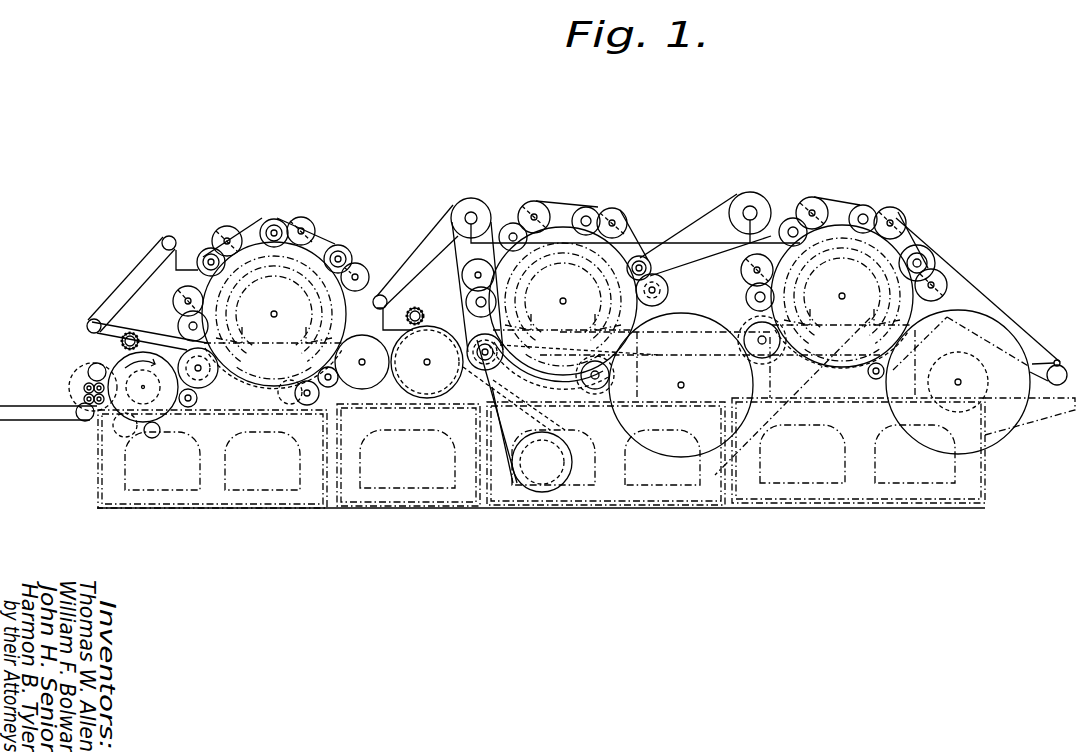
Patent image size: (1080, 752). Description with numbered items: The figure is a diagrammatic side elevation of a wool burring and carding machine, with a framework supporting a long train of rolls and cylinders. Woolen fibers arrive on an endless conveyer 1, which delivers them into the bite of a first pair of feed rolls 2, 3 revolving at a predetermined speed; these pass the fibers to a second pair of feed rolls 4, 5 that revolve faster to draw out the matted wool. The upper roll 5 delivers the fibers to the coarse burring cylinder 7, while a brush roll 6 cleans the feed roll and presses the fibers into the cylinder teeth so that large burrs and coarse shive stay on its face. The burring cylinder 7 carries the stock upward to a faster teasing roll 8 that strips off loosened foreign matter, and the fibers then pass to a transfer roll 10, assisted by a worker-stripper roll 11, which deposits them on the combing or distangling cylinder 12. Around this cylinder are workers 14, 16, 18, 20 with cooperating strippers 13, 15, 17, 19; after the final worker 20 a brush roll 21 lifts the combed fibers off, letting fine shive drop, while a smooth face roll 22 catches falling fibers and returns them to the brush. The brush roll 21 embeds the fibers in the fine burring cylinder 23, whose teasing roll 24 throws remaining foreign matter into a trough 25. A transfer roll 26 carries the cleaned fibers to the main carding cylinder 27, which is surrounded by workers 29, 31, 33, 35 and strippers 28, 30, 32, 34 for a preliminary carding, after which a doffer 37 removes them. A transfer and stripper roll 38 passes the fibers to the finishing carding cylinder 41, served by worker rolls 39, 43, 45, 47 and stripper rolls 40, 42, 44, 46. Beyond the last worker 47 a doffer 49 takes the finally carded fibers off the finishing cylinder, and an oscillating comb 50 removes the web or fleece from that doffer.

The endless conveyer 1 is at (34, 424).
The feed roll 2 is at (83, 393).
The feed roll 3 is at (88, 374).
The feed roll 4 is at (104, 399).
The upper feed roll 5 is at (132, 386).
The brush roll 6 is at (92, 362).
The coarse burring cylinder 7 is at (161, 430).
The teasing roll 8 is at (130, 332).
The transfer roll 10 is at (219, 375).
The worker-stripper roll 11 is at (197, 398).
The combing or distangling cylinder 12 is at (274, 388).
The stripper 13 is at (178, 326).
The worker 14 is at (173, 300).
The stripper 15 is at (205, 250).
The worker 16 is at (227, 226).
The stripper 17 is at (275, 219).
The worker 18 is at (309, 221).
The stripper 19 is at (340, 246).
The final combing worker 20 is at (363, 267).
The brush roll 21 is at (374, 388).
The smooth face roll 22 is at (336, 381).
The fine burring cylinder 23 is at (440, 398).
The teasing roll 24 is at (416, 307).
The trough or container 25 is at (383, 323).
The transfer roll 26 is at (500, 361).
The main carding cylinder 27 is at (581, 379).
The stripper 28 is at (466, 303).
The worker 29 is at (462, 276).
The stripper 30 is at (513, 223).
The worker 31 is at (538, 201).
The stripper 32 is at (590, 207).
The worker 33 is at (621, 213).
The stripper 34 is at (645, 257).
The worker 35 is at (668, 290).
The doffer 37 is at (611, 410).
The transfer and stripper roll 38 is at (772, 358).
The worker roll 39 is at (741, 271).
The stripper roll 40 is at (746, 297).
The finishing carding cylinder 41 is at (836, 372).
The stripper roll 42 is at (792, 217).
The worker roll 43 is at (815, 197).
The stripper roll 44 is at (863, 205).
The worker roll 45 is at (898, 211).
The stripper roll 46 is at (923, 247).
The last worker 47 is at (945, 281).
The doffer 49 is at (990, 320).
The oscillating comb 50 is at (1057, 360).